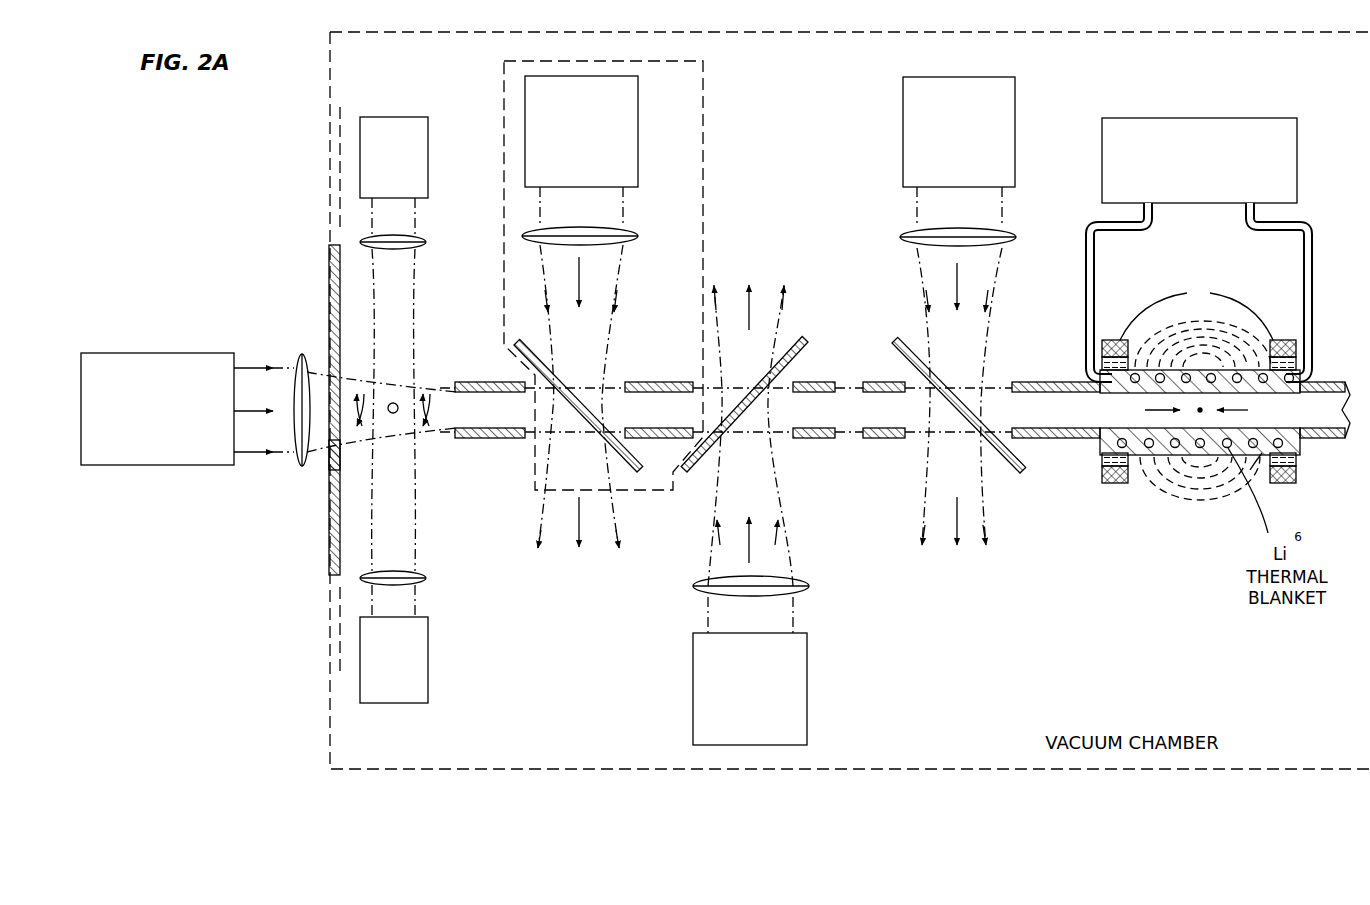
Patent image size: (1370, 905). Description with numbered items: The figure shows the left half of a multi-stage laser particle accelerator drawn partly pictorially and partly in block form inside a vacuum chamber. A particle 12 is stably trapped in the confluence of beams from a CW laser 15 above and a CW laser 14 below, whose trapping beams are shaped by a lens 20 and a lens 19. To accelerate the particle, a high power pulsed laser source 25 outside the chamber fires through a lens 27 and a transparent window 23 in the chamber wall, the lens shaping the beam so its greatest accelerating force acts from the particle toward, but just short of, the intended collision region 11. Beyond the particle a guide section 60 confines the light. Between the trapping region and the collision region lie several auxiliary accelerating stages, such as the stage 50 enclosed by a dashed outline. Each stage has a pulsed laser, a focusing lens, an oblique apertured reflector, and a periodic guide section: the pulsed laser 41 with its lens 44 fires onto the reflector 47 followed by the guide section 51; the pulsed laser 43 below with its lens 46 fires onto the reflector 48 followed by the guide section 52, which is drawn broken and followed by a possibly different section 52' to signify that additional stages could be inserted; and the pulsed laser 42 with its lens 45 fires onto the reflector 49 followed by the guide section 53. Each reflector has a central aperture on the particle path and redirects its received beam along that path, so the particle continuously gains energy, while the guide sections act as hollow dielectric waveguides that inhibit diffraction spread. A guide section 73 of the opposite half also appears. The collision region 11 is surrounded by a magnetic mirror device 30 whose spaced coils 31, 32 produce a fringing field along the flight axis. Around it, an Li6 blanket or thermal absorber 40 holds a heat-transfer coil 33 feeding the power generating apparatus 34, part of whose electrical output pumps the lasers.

The pulsed laser source 25 is at (158, 353).
The lens 27 is at (298, 362).
The transparent window 23 is at (328, 456).
The particle 12 is at (394, 402).
The laser 15 is at (397, 117).
The lens 20 is at (425, 242).
The lens 19 is at (422, 574).
The laser 14 is at (397, 703).
The guide section 60 is at (492, 440).
The auxiliary accelerating stage 50 is at (703, 143).
The pulsed laser 41 is at (640, 136).
The focusing lens 44 is at (638, 240).
The oblique apertured reflector 47 is at (532, 352).
The periodic guide section 51 is at (655, 382).
The oblique apertured reflector 48 is at (808, 352).
The periodic guide section 52 is at (814, 433).
The periodic guide section 52' is at (884, 433).
The oblique apertured reflector 49 is at (900, 350).
The periodic guide section 53 is at (1058, 440).
The pulsed laser 42 is at (903, 129).
The focusing lens 45 is at (900, 238).
The focusing lens 46 is at (810, 586).
The pulsed laser 43 is at (807, 678).
The power generating apparatus 34 is at (1197, 116).
The periodic guide section 73 is at (1327, 383).
The Li6 blanket 40 is at (1293, 447).
The coil 31 is at (1110, 483).
The coil 32 is at (1284, 483).
The magnetic mirror device 30 is at (1186, 289).
The intended collision region 11 is at (1200, 412).
The heat-transfer coil 33 is at (1262, 453).